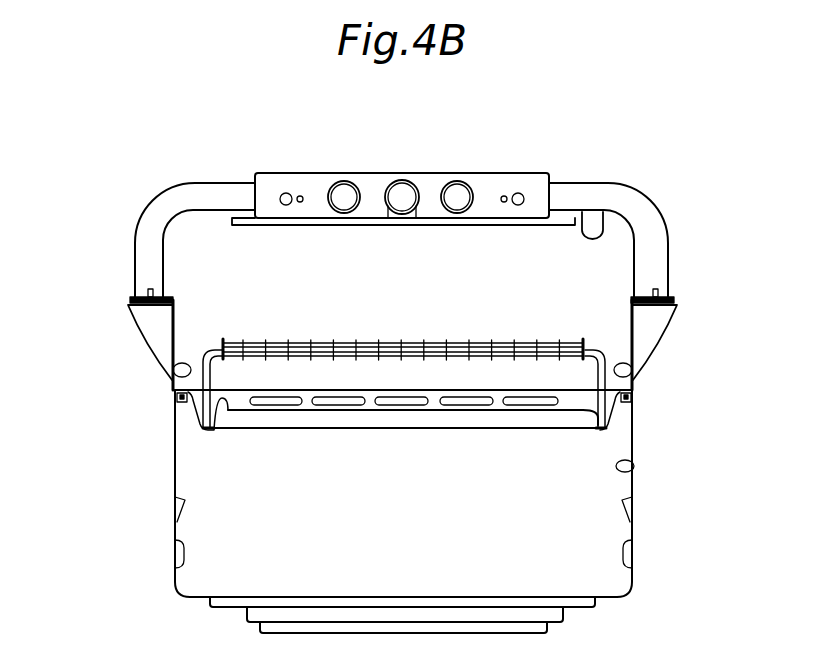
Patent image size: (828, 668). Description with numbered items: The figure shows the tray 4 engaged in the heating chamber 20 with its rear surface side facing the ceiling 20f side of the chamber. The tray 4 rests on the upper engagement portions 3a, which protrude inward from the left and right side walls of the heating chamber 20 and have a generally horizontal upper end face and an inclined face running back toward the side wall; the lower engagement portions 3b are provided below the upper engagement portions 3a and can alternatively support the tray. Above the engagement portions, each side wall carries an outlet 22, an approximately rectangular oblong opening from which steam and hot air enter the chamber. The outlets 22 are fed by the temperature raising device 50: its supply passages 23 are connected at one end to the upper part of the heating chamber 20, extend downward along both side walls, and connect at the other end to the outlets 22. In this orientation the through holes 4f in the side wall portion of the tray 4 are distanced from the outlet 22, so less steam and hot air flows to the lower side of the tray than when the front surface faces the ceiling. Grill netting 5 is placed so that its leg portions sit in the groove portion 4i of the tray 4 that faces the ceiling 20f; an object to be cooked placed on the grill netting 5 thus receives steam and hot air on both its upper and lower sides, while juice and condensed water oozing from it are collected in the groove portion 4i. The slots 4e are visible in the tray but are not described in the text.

The supply passage 23 is at (167, 203).
The temperature raising device 50 is at (432, 187).
The ceiling 20f is at (598, 236).
The heating chamber 20 is at (634, 466).
The outlet 22 is at (176, 378).
The upper engagement portion 3a is at (175, 413).
The lower engagement portion 3b is at (178, 502).
The grill netting 5 is at (494, 342).
The tray 4 is at (480, 432).
The slots 4e is at (362, 410).
The groove portion 4i is at (225, 405).
The through hole 4f is at (574, 397).